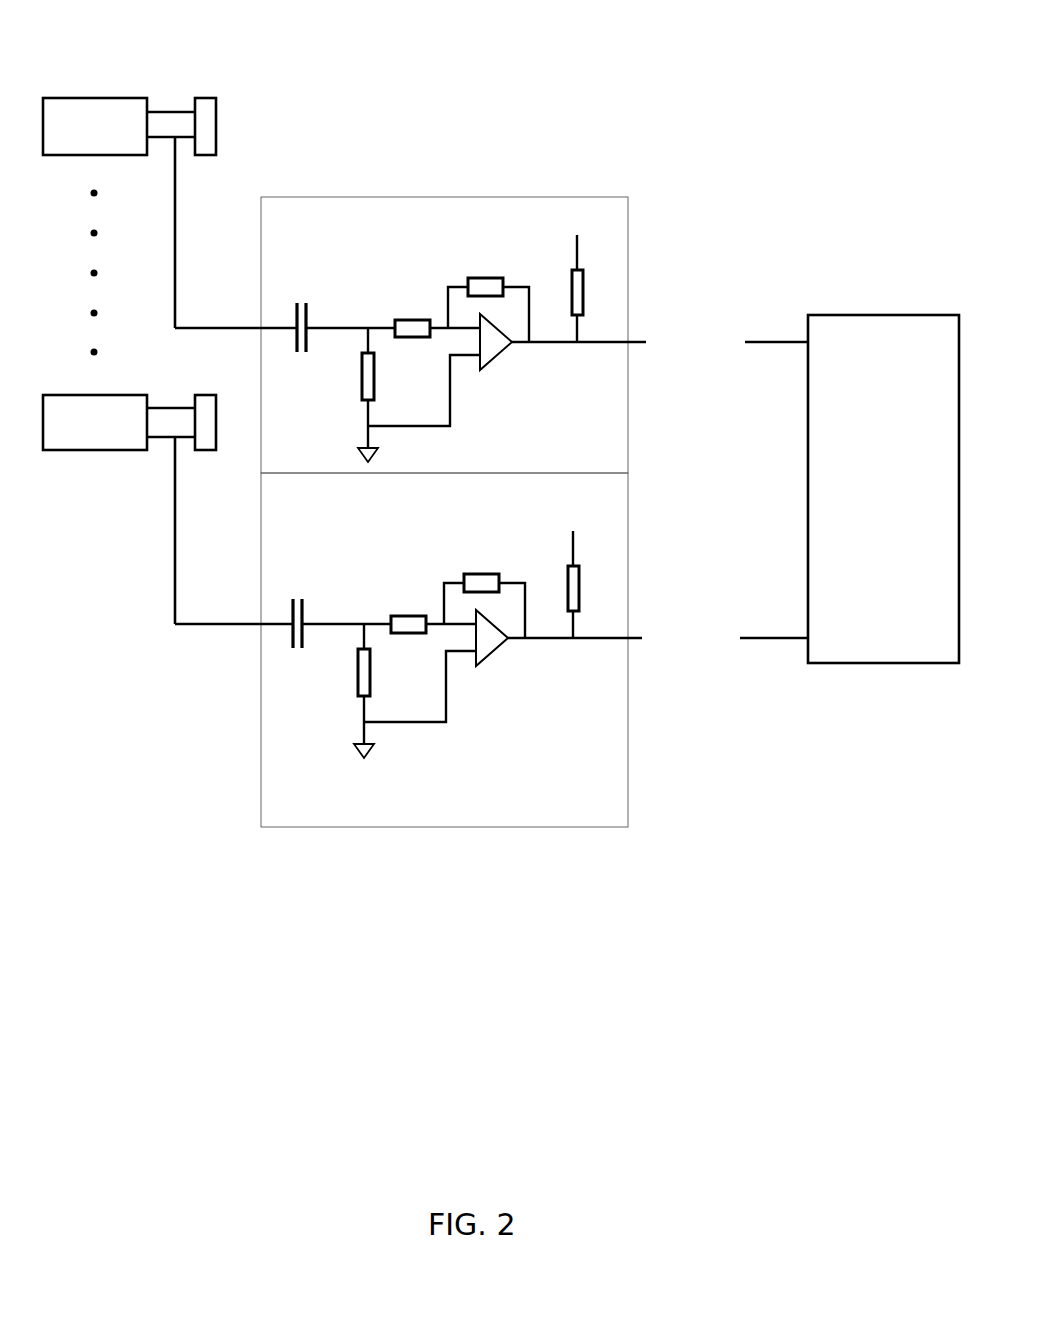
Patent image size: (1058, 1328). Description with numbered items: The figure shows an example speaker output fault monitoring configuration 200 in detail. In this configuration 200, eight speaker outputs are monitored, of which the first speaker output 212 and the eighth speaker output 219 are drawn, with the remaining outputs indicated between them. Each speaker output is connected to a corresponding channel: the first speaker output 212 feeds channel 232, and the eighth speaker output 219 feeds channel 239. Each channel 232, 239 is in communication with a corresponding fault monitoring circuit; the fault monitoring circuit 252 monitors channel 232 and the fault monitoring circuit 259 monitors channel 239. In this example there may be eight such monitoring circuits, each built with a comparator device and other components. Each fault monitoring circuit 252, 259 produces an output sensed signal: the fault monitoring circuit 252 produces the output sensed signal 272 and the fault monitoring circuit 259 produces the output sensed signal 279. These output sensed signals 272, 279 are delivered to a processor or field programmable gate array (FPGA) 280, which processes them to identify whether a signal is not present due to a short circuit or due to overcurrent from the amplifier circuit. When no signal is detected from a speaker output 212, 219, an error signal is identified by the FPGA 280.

The configuration 200 is at (105, 36).
The speaker output 212 is at (155, 96).
The channel 232 is at (225, 109).
The speaker output 219 is at (152, 396).
The channel 239 is at (205, 453).
The fault monitoring circuit 252 is at (632, 255).
The fault monitoring circuit 259 is at (628, 525).
The output sensed signal 272 is at (740, 326).
The output sensed signal 279 is at (722, 623).
The field programmable gate array (FPGA) 280 is at (883, 489).